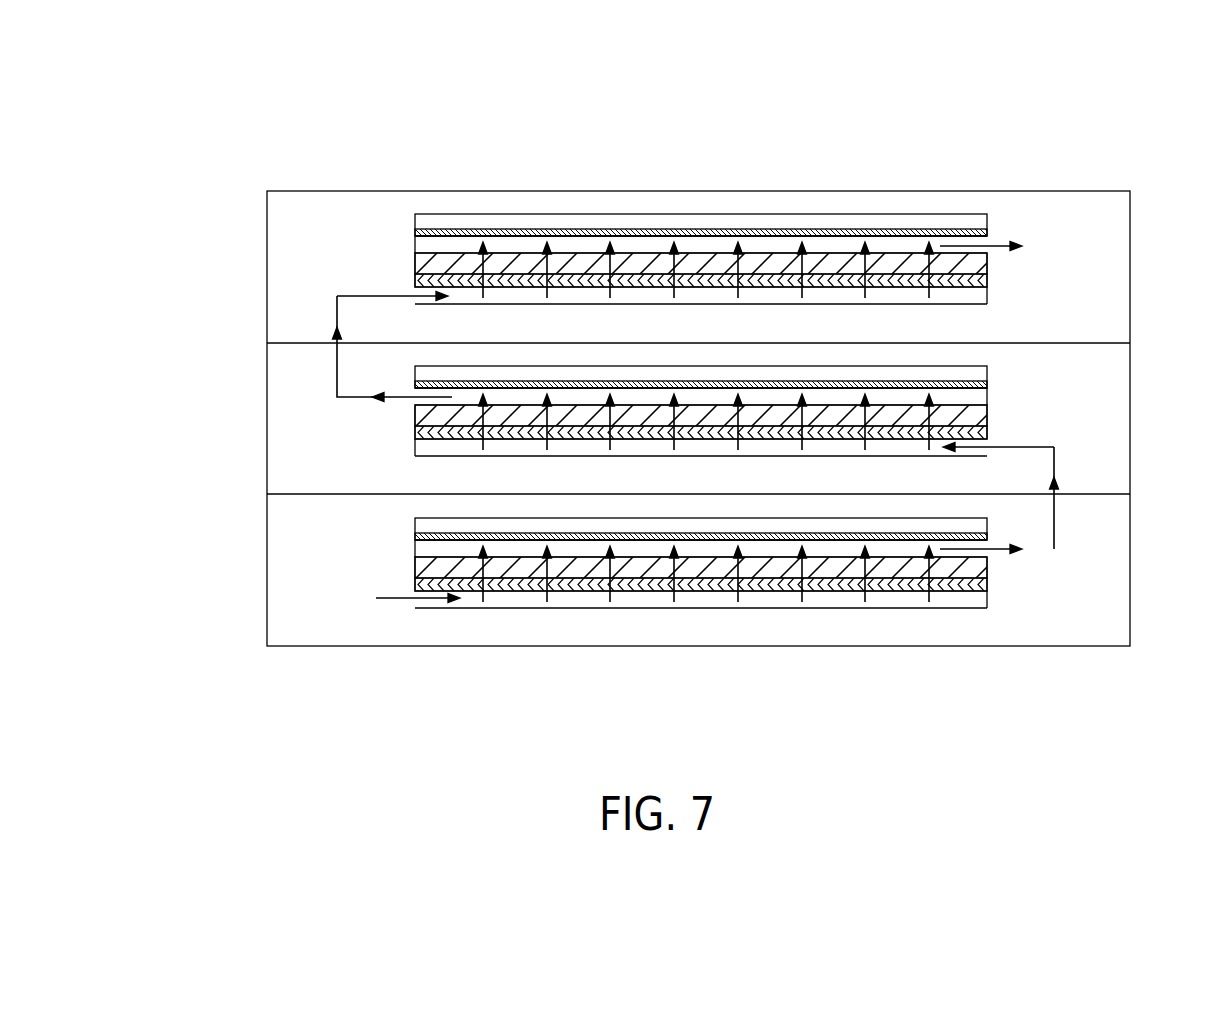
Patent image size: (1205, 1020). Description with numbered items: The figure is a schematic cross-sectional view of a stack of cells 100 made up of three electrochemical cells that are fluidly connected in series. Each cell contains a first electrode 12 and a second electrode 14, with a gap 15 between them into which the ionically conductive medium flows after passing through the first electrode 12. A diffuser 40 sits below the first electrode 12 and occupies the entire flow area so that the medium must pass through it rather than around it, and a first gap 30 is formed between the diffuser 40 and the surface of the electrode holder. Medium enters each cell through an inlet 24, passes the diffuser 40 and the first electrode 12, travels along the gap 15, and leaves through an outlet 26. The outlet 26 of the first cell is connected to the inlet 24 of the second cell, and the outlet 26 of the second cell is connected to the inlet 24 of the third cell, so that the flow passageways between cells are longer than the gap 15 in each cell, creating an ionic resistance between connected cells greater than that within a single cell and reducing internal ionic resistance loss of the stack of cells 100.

The stack of cells 100 is at (276, 112).
The second electrode 14 is at (590, 232).
The gap 15 is at (644, 243).
The first electrode 12 is at (725, 262).
The diffuser 40 is at (850, 295).
The first gap 30 is at (918, 293).
The inlet 24 is at (380, 294).
The outlet 26 is at (997, 243).